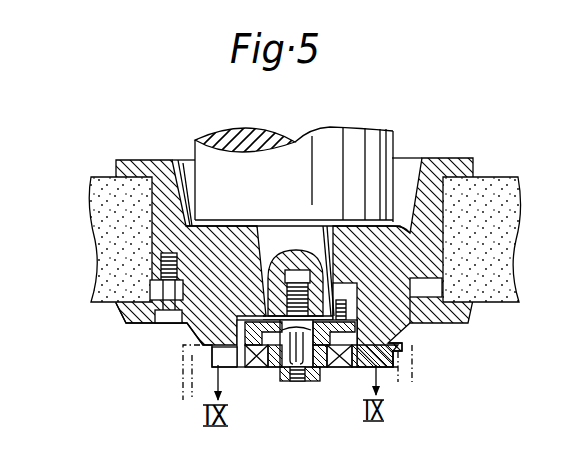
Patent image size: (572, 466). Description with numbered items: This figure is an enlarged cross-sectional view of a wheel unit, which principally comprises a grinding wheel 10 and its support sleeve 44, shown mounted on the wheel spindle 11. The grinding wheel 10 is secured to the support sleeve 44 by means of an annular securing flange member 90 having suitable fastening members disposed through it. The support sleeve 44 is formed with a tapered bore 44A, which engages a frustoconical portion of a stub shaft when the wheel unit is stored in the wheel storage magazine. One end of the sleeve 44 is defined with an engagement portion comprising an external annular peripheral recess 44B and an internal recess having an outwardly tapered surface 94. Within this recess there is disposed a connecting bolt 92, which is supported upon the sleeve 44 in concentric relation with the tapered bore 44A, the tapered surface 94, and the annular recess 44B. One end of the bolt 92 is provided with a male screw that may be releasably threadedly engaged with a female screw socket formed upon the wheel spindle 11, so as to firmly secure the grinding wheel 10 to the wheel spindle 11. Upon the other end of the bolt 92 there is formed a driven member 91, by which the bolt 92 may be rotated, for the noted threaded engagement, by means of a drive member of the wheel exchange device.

The grinding wheel 10 is at (500, 247).
The wheel spindle 11 is at (326, 146).
The support sleeve 44 is at (440, 157).
The tapered bore 44A is at (328, 243).
The external annular peripheral recess 44B is at (390, 347).
The annular securing flange member 90 is at (122, 322).
The driven member 91 is at (327, 367).
The connecting bolt 92 is at (277, 367).
The outwardly tapered surface 94 is at (364, 364).